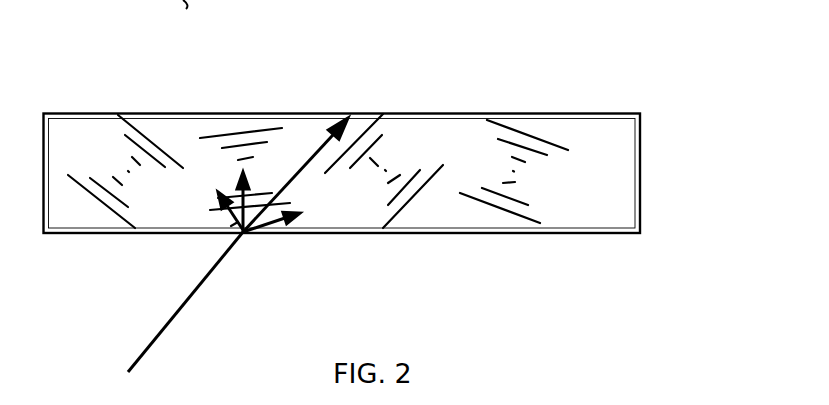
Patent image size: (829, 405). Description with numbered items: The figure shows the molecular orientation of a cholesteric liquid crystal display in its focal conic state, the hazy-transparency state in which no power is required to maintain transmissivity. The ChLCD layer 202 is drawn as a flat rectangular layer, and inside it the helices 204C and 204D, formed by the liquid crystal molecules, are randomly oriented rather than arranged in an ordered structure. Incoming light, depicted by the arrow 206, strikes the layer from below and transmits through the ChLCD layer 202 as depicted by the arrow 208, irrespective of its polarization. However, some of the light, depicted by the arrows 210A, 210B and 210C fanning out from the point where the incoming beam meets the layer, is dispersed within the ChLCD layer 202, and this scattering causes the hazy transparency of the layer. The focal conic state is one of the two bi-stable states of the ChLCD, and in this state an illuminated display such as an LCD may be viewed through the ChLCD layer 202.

The ChLCD layer 202 is at (642, 173).
The helix 204C is at (390, 138).
The helix 204D is at (527, 131).
The arrow depicting light 206 is at (167, 322).
The arrow depicting transmitted light 208 is at (295, 162).
The arrow depicting dispersed light 210A is at (227, 195).
The arrow depicting dispersed light 210B is at (238, 223).
The arrow depicting dispersed light 210C is at (263, 232).